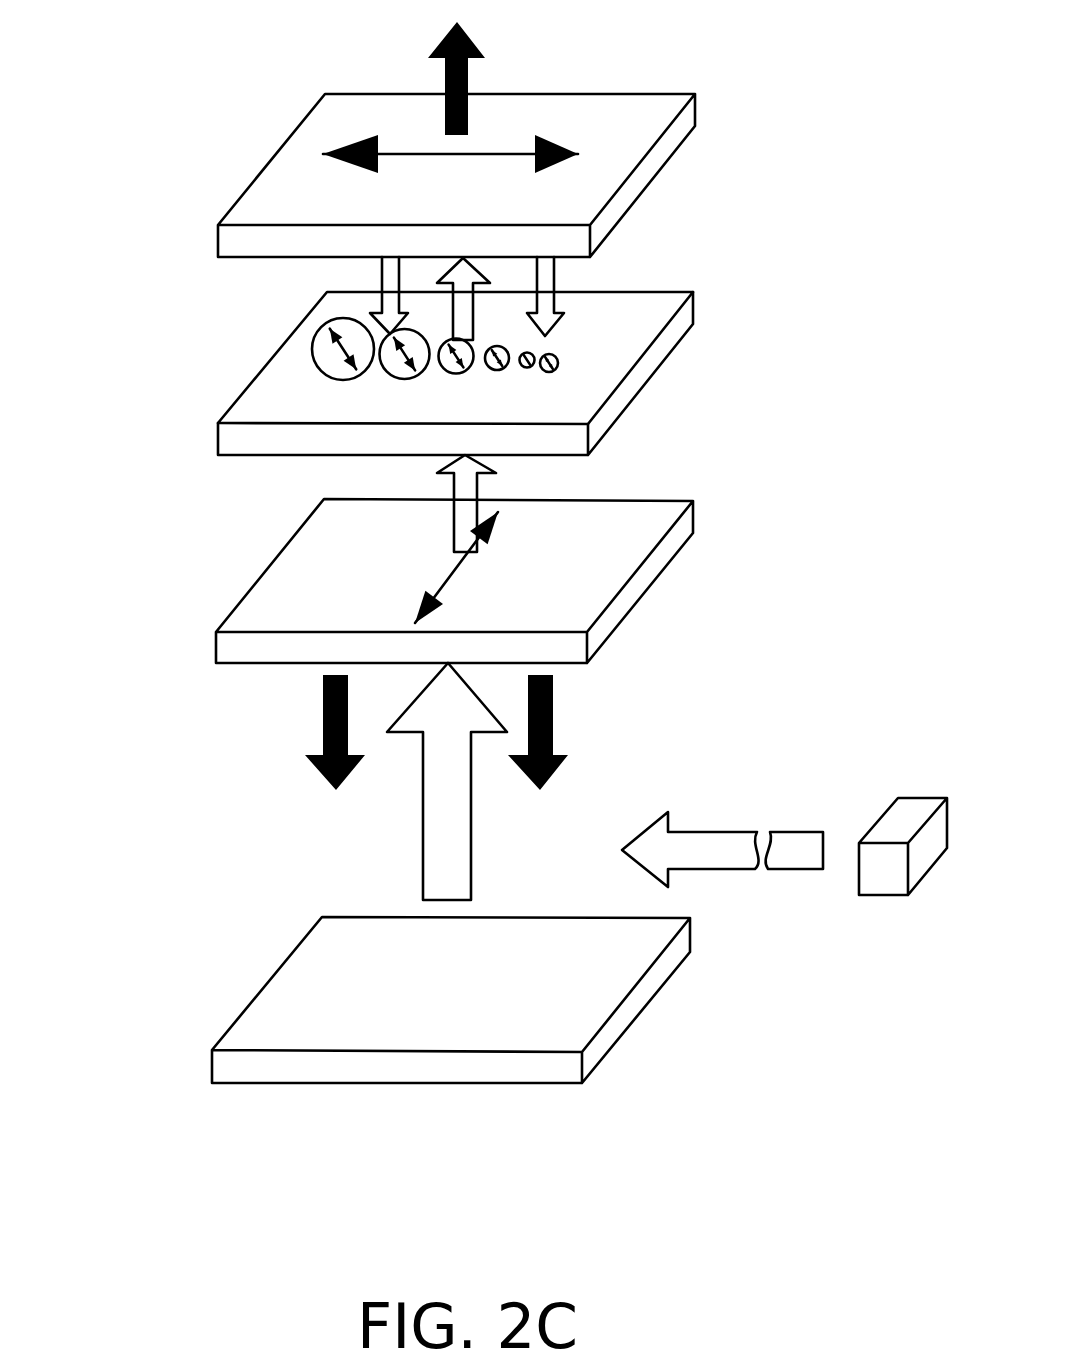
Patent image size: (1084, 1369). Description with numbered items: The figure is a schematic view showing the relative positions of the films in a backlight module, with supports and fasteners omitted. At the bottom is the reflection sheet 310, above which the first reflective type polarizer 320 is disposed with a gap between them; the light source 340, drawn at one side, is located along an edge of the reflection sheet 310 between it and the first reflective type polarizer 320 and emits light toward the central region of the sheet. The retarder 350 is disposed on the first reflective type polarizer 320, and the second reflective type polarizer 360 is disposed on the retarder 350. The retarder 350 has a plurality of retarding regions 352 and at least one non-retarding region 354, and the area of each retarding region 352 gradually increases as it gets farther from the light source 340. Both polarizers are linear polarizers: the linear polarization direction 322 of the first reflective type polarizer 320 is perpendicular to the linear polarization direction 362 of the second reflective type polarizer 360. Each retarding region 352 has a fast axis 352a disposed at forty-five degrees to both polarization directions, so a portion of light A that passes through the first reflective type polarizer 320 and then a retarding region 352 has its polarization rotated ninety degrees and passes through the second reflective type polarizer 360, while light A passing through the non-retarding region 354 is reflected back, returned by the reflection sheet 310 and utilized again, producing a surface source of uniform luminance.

The reflection sheet 310 is at (263, 1032).
The first reflective type polarizer 320 is at (647, 590).
The linear polarization direction 322 is at (458, 572).
The light source 340 is at (883, 895).
The retarder 350 is at (437, 373).
The retarding regions 352 is at (310, 269).
The fast axis 352a is at (355, 347).
The non-retarding region 354 is at (267, 412).
The second reflective type polarizer 360 is at (647, 160).
The linear polarization direction 362 is at (503, 154).
The light A is at (465, 482).